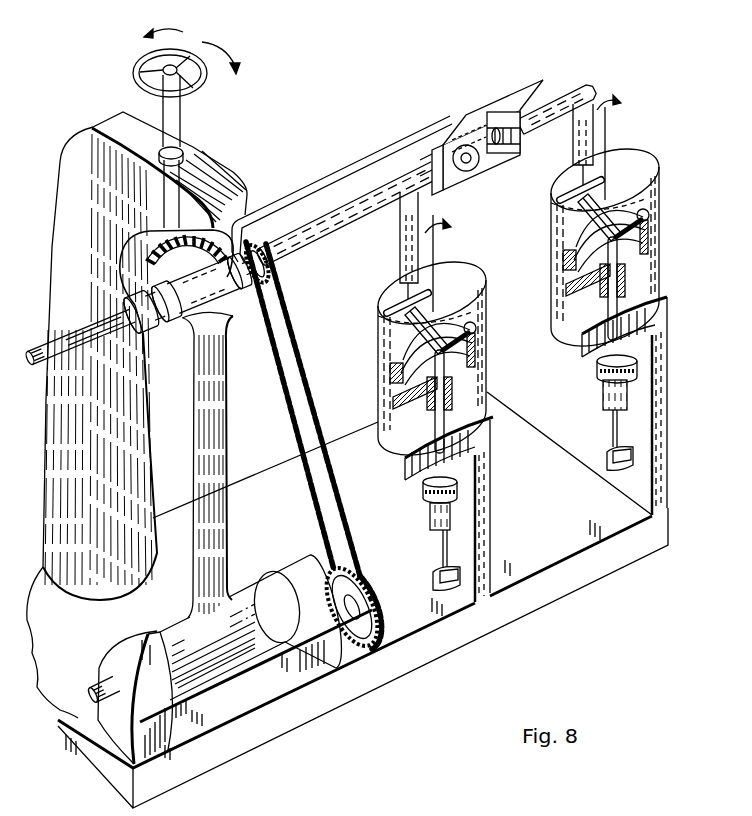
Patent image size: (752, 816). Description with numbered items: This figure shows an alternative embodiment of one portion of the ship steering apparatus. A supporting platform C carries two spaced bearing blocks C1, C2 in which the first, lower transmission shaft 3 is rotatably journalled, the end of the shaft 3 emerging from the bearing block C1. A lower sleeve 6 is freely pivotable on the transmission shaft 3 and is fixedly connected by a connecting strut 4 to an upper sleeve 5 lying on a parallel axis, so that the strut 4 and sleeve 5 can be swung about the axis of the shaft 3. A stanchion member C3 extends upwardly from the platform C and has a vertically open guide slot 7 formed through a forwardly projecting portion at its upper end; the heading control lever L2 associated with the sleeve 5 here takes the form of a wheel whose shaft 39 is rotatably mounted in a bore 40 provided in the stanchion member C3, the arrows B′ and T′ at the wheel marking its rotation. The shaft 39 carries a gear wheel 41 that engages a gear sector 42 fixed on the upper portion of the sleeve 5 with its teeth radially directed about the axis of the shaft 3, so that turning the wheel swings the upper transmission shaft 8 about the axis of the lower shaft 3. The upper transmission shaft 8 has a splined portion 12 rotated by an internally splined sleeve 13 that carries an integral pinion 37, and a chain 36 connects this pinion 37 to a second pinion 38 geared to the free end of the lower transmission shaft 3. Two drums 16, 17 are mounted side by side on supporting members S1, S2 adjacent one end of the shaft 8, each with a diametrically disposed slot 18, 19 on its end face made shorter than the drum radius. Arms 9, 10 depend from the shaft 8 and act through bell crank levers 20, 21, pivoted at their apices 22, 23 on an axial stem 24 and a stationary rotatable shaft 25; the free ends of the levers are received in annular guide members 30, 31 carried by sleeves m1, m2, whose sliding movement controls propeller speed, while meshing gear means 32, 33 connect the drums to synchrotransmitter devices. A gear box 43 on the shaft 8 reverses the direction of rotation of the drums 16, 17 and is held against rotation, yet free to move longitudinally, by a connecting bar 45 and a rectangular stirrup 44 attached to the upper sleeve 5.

The first transmission shaft 3 is at (100, 682).
The connecting strut 4 is at (207, 413).
The upper sleeve 5 is at (190, 300).
The lower sleeve 6 is at (243, 592).
The guide slot 7 is at (190, 155).
The second transmission shaft 8 is at (375, 202).
The arm 9 is at (400, 227).
The arm 10 is at (577, 128).
The splined portion 12 is at (87, 320).
The internally splined sleeve 13 is at (125, 256).
The drum 16 is at (380, 330).
The drum 17 is at (565, 213).
The slot 18 is at (397, 305).
The slot 19 is at (567, 188).
The bell crank lever 20 is at (385, 313).
The bell crank lever 21 is at (613, 193).
The apex 22 is at (400, 392).
The apex 23 is at (575, 265).
The axial stem 24 is at (438, 548).
The stationary rotatable shaft 25 is at (613, 427).
The annular guide member 30 is at (402, 360).
The annular guide member 31 is at (580, 227).
The meshing gear means 32 is at (423, 493).
The meshing gear means 33 is at (597, 372).
The chain 36 is at (300, 375).
The pinion 37 is at (258, 235).
The motor sprocket 38 is at (363, 592).
The shaft 39 is at (178, 118).
The bore 40 is at (170, 195).
The gear wheel 41 is at (157, 243).
The gear sector 42 is at (236, 300).
The gear box 43 is at (510, 117).
The rectangular stirrup 44 is at (482, 127).
The connecting bar 45 is at (333, 178).
The heading control lever L2 is at (133, 72).
The rotation direction B′ is at (163, 19).
The rotation direction T′ is at (231, 60).
The supporting platform C is at (420, 655).
The bearing block C1 is at (153, 713).
The bearing block C2 is at (297, 652).
The stanchion member C3 is at (75, 207).
The supporting member S1 is at (449, 509).
The supporting member S2 is at (624, 406).
The sleeve m1 is at (450, 383).
The sleeve m2 is at (625, 267).